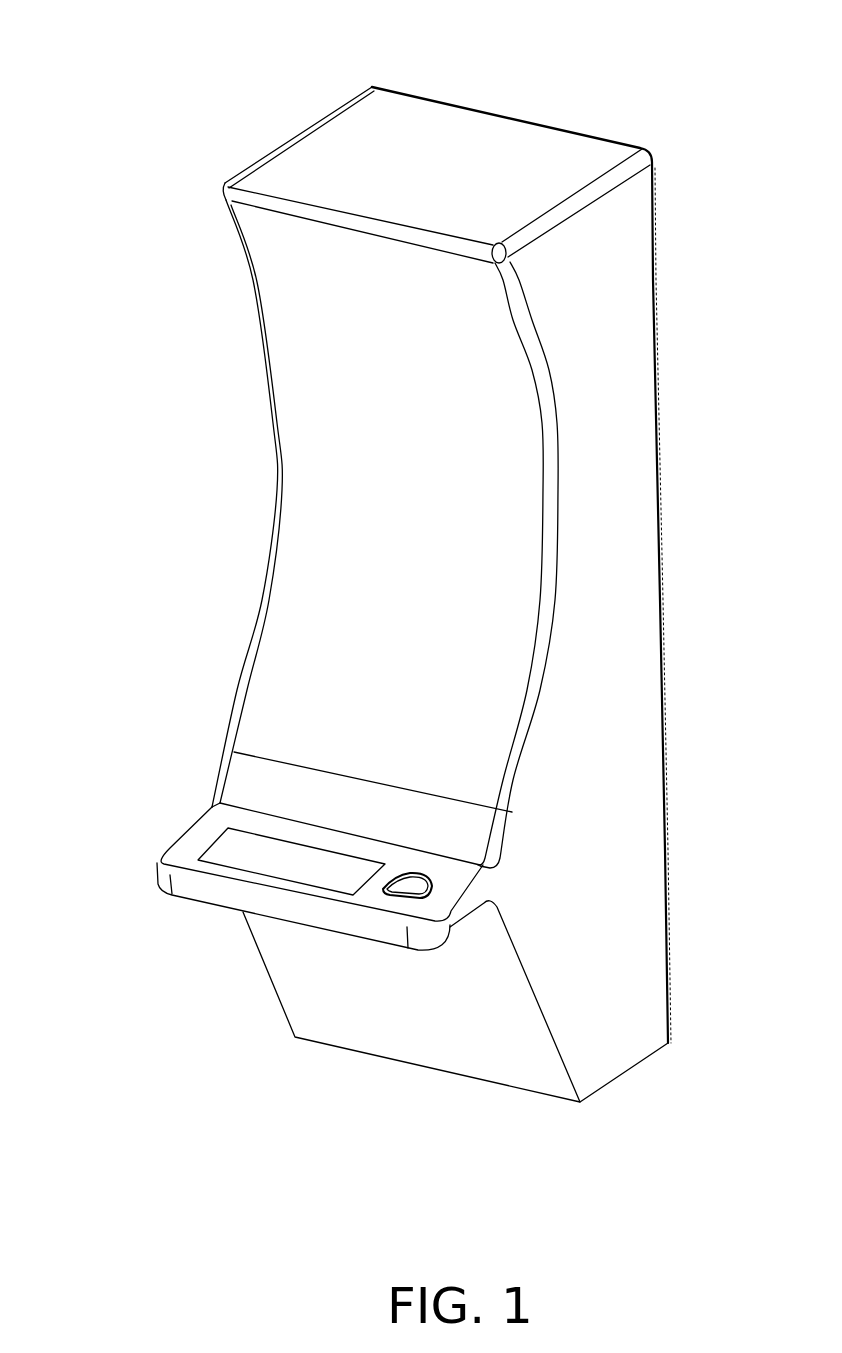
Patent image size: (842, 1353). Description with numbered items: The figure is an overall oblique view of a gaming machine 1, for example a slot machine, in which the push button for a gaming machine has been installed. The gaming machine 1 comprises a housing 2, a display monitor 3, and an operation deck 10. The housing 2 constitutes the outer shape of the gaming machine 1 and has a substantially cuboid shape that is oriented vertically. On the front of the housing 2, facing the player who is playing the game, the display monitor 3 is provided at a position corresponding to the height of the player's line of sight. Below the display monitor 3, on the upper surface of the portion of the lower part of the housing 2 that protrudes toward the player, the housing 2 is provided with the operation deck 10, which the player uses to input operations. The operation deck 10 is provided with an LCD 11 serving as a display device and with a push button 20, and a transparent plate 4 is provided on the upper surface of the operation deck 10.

The gaming machine 1 is at (283, 93).
The housing 2 is at (478, 130).
The display monitor 3 is at (305, 423).
The operation deck 10 is at (200, 803).
The transparent plate 4 is at (192, 852).
The LCD 11 is at (232, 842).
The push button 20 is at (442, 885).